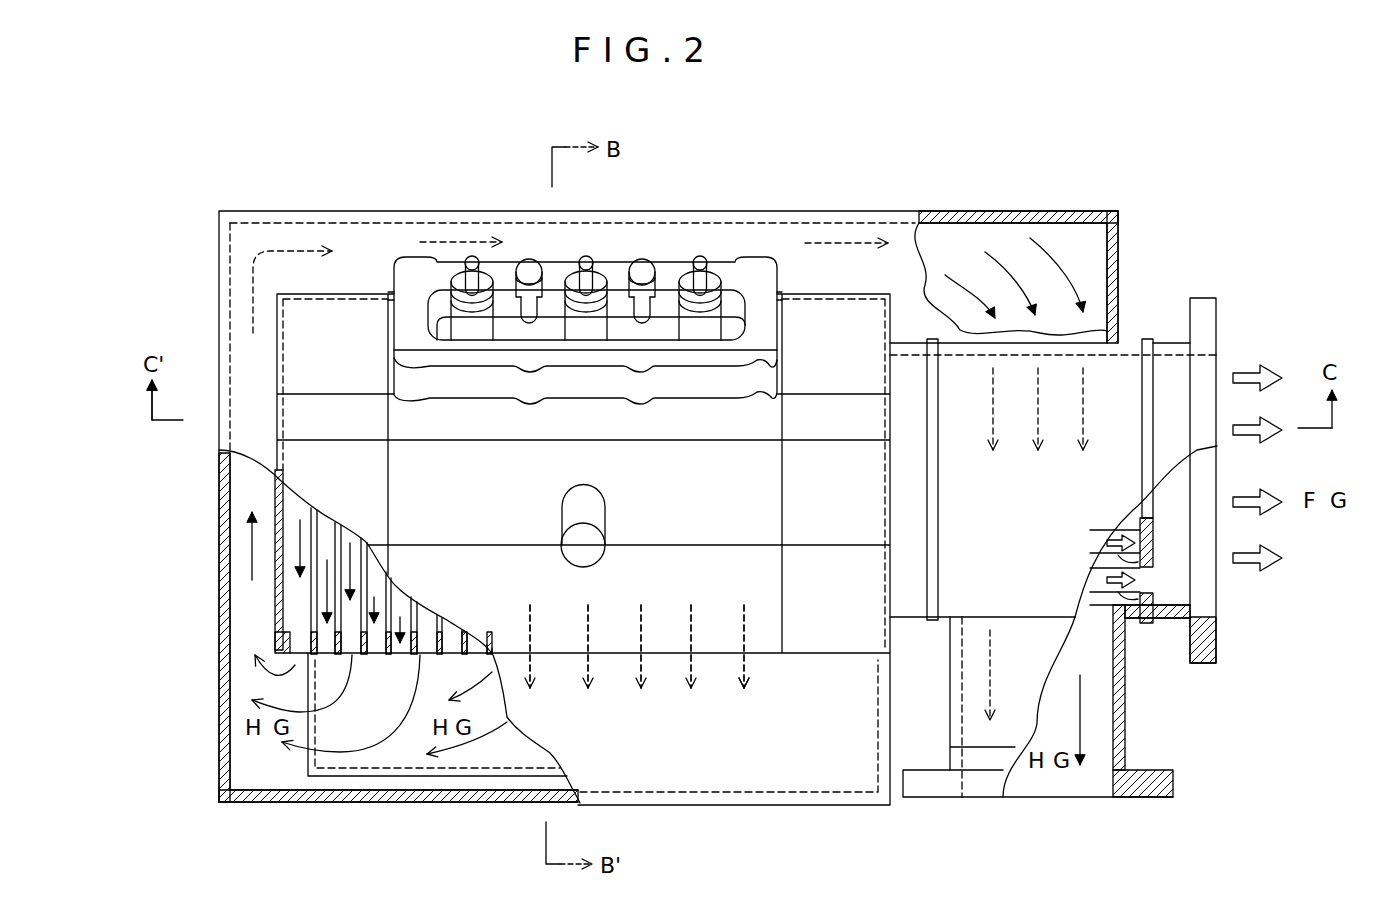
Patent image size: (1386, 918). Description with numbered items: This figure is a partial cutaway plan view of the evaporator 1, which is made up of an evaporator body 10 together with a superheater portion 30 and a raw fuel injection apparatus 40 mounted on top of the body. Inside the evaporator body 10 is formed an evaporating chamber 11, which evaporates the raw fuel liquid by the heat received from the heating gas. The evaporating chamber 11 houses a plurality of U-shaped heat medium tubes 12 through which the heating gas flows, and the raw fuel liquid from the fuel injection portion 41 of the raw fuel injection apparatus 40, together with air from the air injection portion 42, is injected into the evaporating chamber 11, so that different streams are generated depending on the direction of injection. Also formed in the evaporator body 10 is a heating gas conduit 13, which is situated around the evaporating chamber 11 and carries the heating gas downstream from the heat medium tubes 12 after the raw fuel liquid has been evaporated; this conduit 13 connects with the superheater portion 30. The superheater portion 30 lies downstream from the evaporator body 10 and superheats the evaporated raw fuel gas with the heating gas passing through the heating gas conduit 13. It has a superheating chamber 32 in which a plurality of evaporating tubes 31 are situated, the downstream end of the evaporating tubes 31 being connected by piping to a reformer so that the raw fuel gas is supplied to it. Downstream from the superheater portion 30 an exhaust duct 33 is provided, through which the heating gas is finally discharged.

The evaporator 1 is at (906, 187).
The evaporator body 10 is at (252, 633).
The evaporating chamber 11 is at (277, 503).
The heat medium tubes 12 is at (285, 590).
The heating gas conduit 13 is at (1075, 243).
The superheater portion 30 is at (1163, 314).
The evaporating tubes 31 is at (1157, 563).
The superheating chamber 32 is at (1097, 603).
The exhaust duct 33 is at (1123, 720).
The raw fuel injection apparatus 40 is at (732, 247).
The fuel injection portion 41 is at (701, 253).
The air injection portion 42 is at (531, 325).